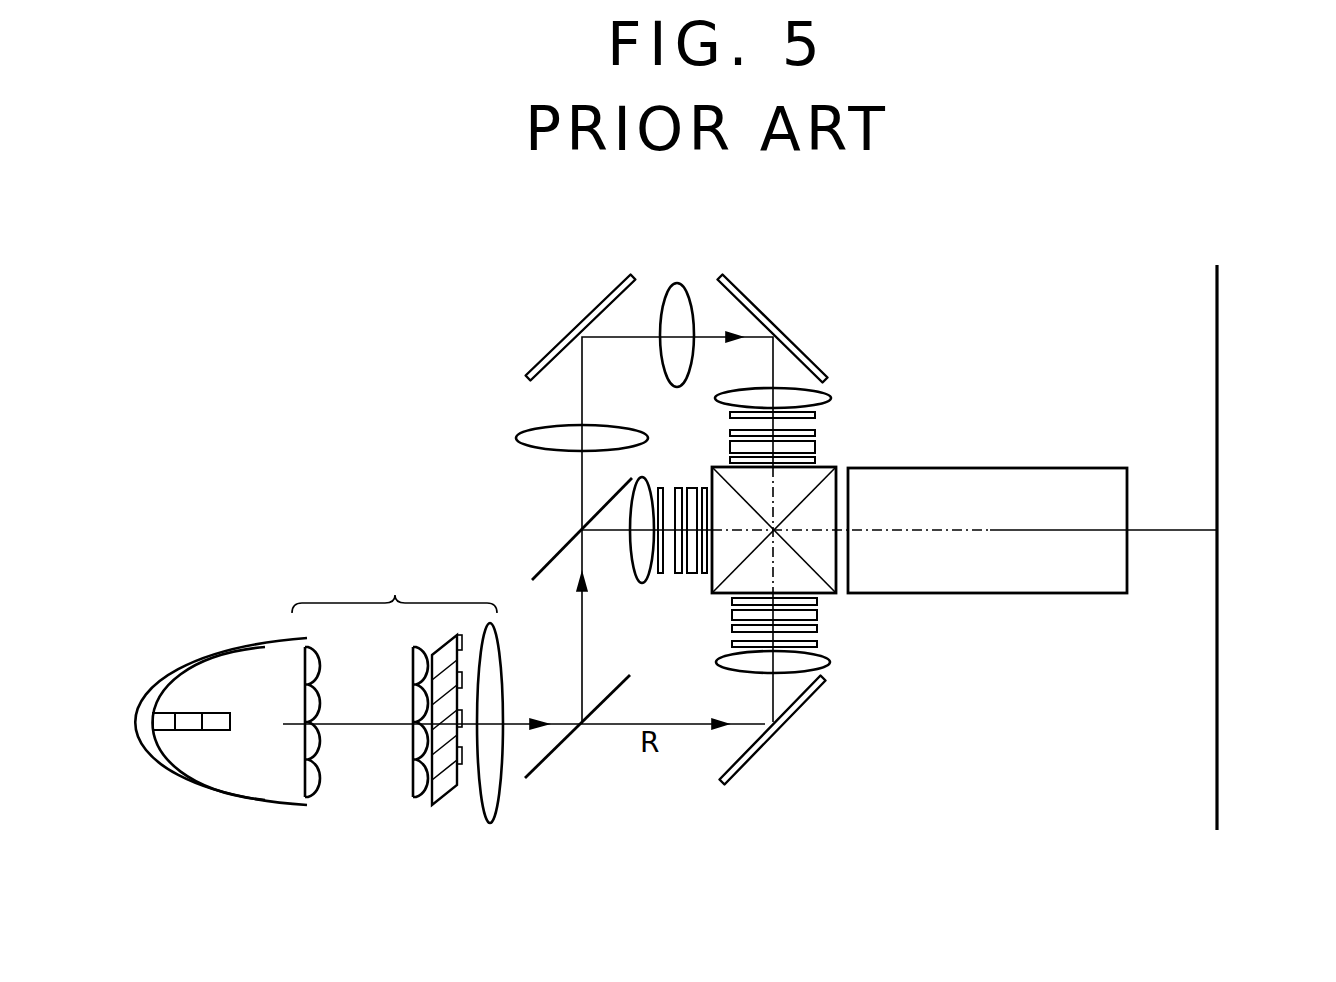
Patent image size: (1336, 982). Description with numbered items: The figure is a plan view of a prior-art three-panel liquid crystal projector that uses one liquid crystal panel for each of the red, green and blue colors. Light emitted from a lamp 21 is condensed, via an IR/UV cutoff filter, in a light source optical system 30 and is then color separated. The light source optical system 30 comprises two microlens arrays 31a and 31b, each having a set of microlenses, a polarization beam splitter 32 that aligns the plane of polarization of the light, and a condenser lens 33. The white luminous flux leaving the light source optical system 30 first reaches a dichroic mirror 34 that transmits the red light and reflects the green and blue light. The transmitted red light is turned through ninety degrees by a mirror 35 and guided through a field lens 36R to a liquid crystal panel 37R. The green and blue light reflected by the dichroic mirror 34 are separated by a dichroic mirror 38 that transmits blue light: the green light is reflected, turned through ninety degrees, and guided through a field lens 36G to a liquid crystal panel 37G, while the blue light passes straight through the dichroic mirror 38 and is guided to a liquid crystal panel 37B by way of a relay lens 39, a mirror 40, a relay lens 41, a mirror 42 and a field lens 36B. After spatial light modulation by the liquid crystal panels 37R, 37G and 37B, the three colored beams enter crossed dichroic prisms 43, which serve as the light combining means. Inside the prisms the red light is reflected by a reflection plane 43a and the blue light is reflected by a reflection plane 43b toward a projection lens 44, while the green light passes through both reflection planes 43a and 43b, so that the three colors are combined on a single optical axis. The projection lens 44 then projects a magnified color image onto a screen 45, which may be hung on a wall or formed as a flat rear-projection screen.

The lamp 21 is at (188, 731).
The light source optical system 30 is at (394, 588).
The microlens array 31a is at (300, 800).
The microlens array 31b is at (413, 800).
The polarization beam splitter 32 is at (443, 806).
The condenser lens 33 is at (492, 823).
The dichroic mirror 34 is at (562, 746).
The mirror 35 is at (752, 757).
The field lens 36B is at (832, 397).
The field lens 36G is at (638, 583).
The field lens 36R is at (830, 661).
The liquid crystal panel 37B is at (817, 447).
The liquid crystal panel 37G is at (690, 575).
The liquid crystal panel 37R is at (818, 614).
The dichroic mirror 38 is at (545, 565).
The relay lens 39 is at (515, 438).
The mirror 40 is at (594, 313).
The relay lens 41 is at (677, 283).
The mirror 42 is at (740, 290).
The crossed dichroic prisms 43 is at (710, 465).
The reflection plane 43a is at (813, 502).
The reflection plane 43b is at (810, 557).
The projection lens 44 is at (1070, 594).
The screen 45 is at (1217, 372).